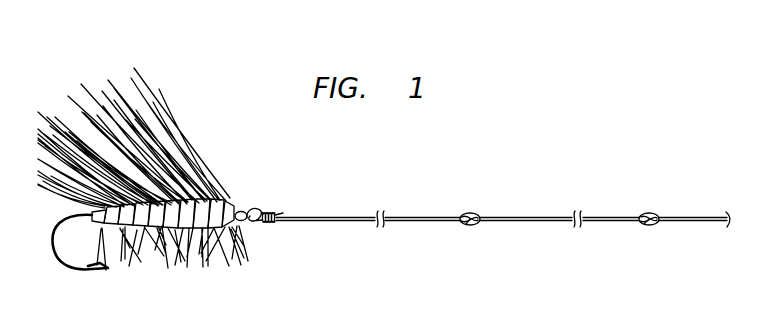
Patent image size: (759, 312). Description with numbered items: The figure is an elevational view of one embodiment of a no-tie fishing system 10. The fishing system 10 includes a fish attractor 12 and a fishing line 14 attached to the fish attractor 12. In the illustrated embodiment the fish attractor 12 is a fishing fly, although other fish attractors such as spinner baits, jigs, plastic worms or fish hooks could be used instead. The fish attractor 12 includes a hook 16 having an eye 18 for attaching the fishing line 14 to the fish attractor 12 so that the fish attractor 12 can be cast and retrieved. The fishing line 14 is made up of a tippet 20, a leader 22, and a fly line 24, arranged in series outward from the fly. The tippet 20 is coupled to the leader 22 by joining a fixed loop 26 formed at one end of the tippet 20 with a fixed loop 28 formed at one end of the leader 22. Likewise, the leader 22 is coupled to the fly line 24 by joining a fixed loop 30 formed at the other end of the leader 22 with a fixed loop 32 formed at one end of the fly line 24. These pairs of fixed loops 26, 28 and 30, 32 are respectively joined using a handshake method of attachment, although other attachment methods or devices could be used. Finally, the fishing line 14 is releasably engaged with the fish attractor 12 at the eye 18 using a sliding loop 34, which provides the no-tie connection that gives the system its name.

The no-tie fishing system 10 is at (420, 154).
The fish attractor 12 is at (204, 116).
The fishing line 14 is at (533, 182).
The hook 16 is at (88, 216).
The eye 18 is at (257, 197).
The tippet 20 is at (326, 222).
The leader 22 is at (528, 223).
The fly line 24 is at (700, 222).
The fixed loop 26 is at (474, 214).
The fixed loop 28 is at (464, 226).
The fixed loop 30 is at (651, 214).
The fixed loop 32 is at (645, 225).
The sliding loop 34 is at (264, 234).